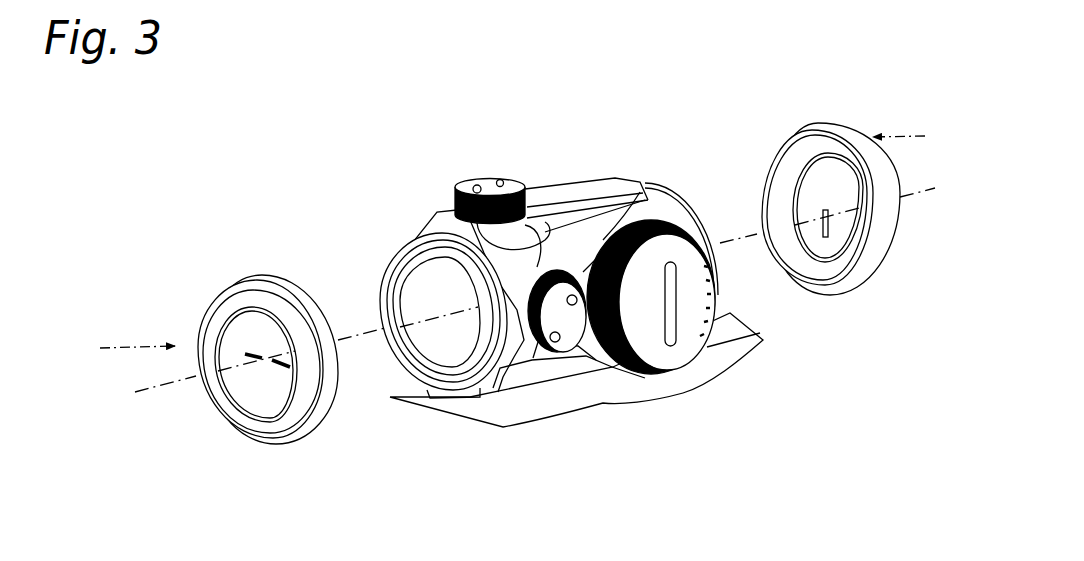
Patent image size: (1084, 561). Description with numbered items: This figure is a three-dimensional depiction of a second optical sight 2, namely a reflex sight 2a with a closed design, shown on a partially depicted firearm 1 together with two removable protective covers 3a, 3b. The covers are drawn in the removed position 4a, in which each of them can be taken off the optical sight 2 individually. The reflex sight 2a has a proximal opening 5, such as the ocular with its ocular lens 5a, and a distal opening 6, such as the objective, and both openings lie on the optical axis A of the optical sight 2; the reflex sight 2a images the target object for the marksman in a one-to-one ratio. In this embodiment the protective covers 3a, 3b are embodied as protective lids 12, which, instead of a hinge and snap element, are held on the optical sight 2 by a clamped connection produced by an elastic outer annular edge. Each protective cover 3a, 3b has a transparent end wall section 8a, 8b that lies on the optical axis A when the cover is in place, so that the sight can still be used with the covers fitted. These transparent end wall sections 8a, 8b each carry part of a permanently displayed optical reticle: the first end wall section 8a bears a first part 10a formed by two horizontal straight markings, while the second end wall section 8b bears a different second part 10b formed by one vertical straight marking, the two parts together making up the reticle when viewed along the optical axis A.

The firearm 1 is at (598, 385).
The optical sight 2 is at (555, 185).
The reflex sight 2a is at (584, 176).
The protective cover 3a is at (228, 305).
The protective cover 3b is at (808, 148).
The removed position 4a is at (511, 247).
The proximal opening 5 is at (393, 268).
The ocular lens 5a is at (437, 335).
The distal opening 6 is at (684, 187).
The transparent end wall section 8a is at (268, 388).
The transparent end wall section 8b is at (844, 241).
The first part of the reticle 10a is at (274, 364).
The second part of the reticle 10b is at (817, 250).
The protective lid 12 is at (262, 273).
The optical axis A is at (372, 340).